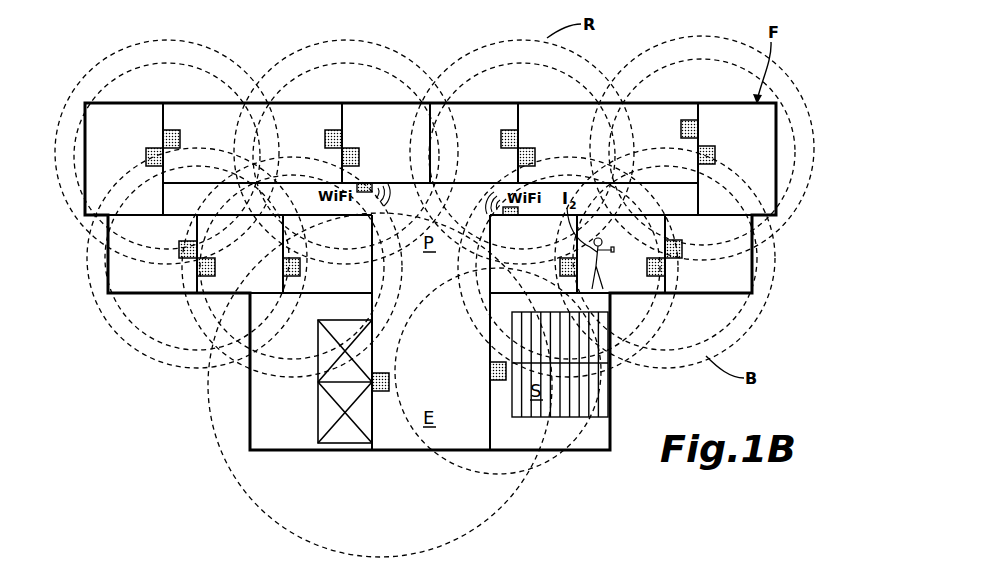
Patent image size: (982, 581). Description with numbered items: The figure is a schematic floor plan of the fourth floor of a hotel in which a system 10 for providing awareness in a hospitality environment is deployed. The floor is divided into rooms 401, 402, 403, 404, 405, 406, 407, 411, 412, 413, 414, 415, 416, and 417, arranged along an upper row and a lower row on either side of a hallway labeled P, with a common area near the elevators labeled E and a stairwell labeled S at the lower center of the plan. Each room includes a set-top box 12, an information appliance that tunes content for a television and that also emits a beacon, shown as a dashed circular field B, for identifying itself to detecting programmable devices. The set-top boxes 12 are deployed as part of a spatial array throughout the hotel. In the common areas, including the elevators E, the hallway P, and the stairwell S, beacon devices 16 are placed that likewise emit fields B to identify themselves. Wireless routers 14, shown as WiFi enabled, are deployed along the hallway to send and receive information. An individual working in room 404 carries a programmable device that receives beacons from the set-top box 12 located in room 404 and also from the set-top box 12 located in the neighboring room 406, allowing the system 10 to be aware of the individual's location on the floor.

The system for providing awareness in a hospitality environment 10 is at (99, 54).
The set-top box 12 is at (430, 205).
The wireless router 14 is at (437, 184).
The beacon device 16 is at (439, 378).
The room 401 is at (474, 143).
The room 402 is at (533, 254).
The room 403 is at (563, 143).
The room 404 is at (621, 254).
The room 405 is at (653, 143).
The room 406 is at (708, 254).
The room 407 is at (737, 159).
The room 411 is at (386, 143).
The room 412 is at (327, 254).
The room 413 is at (296, 143).
The room 414 is at (240, 254).
The room 415 is at (252, 143).
The room 416 is at (152, 254).
The room 417 is at (124, 159).